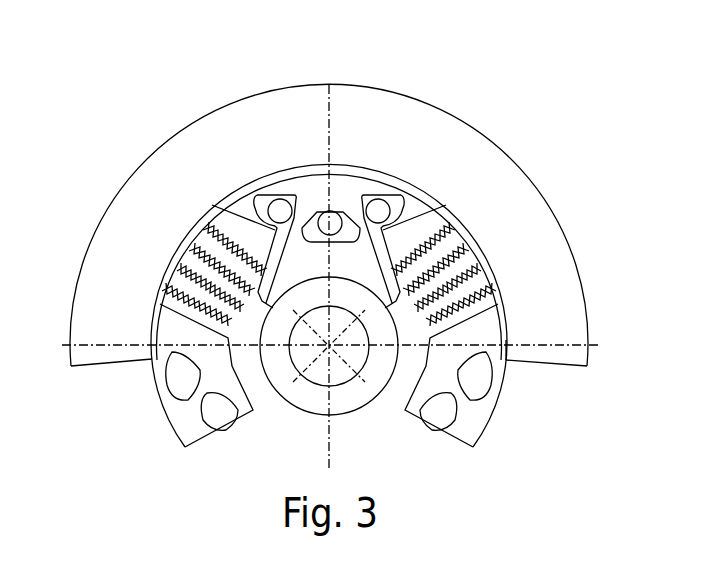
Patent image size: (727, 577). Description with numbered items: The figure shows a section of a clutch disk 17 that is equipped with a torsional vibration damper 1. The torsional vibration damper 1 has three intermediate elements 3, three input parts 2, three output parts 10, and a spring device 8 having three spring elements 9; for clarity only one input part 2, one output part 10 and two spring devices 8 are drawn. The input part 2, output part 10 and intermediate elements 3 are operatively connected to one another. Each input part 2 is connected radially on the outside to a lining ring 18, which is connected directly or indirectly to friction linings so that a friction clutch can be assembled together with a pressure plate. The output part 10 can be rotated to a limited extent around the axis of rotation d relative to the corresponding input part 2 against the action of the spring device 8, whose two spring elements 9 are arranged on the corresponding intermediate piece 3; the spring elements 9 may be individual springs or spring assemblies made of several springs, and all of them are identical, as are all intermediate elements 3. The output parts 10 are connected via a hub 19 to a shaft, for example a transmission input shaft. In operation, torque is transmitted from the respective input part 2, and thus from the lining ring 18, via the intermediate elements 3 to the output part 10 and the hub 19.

The torsional vibration damper 1 is at (478, 413).
The input part 2 is at (232, 183).
The intermediate element 3 is at (413, 220).
The spring device 8 is at (185, 285).
The spring element 9 is at (187, 250).
The output part 10 is at (353, 208).
The clutch disk 17 is at (472, 120).
The lining ring 18 is at (201, 175).
The hub 19 is at (288, 383).
The axis of rotation d is at (329, 346).